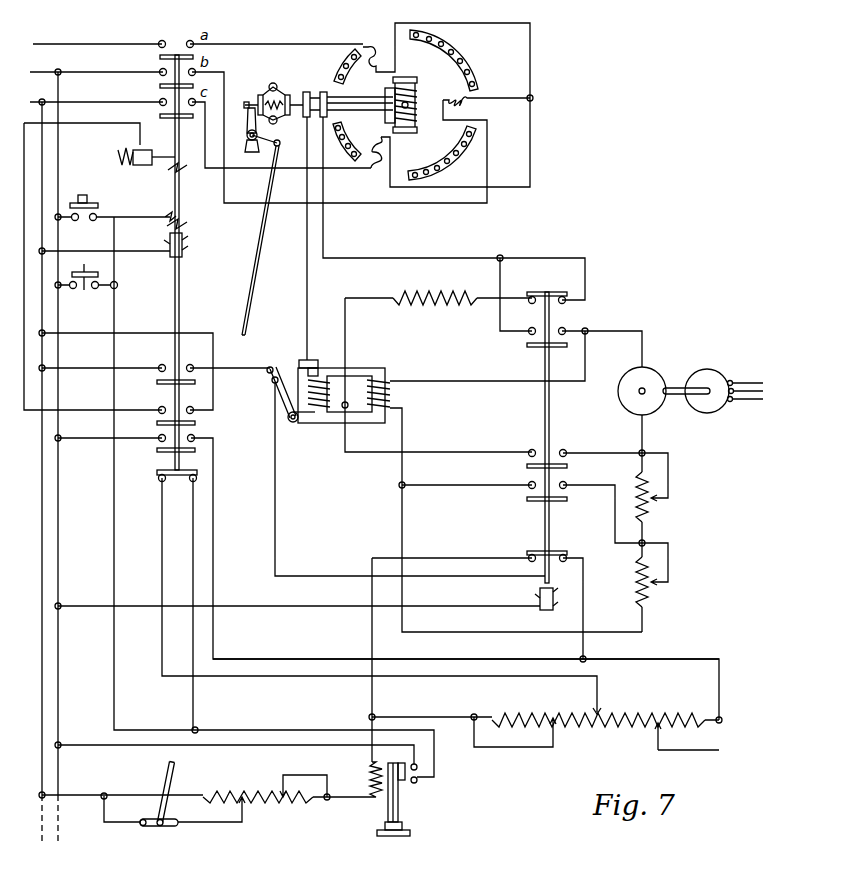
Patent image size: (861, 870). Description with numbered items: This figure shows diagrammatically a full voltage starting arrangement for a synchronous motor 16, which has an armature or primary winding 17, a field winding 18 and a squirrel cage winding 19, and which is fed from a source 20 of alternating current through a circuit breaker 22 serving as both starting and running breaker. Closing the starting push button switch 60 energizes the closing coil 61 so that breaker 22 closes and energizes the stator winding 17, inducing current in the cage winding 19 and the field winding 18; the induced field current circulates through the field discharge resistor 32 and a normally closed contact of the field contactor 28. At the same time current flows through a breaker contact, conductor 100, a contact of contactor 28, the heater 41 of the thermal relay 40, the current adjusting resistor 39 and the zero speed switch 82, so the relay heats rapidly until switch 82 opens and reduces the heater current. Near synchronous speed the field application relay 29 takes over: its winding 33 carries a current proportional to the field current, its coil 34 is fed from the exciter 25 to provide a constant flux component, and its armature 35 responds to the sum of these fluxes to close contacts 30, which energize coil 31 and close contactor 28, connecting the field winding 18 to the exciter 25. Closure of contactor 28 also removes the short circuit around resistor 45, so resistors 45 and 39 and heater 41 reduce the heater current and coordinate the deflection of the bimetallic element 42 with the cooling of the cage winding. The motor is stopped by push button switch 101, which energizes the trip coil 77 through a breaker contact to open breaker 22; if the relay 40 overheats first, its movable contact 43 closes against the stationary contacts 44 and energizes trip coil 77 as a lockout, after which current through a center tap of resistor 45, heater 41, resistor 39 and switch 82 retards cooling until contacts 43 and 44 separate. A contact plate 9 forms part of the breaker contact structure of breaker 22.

The source of current 20 is at (108, 36).
The zero speed switch 82 is at (272, 81).
The armature or primary winding 17 is at (376, 46).
The synchronous motor 16 is at (335, 73).
The squirrel cage winding 19 is at (466, 62).
The field winding 18 is at (417, 100).
The trip coil 77 is at (136, 163).
The circuit breaker 22 is at (207, 200).
The starting push button switch 60 is at (80, 200).
The closing coil 61 is at (183, 241).
The push button switch 101 is at (88, 290).
The field discharge resistor 32 is at (441, 293).
The armature 35 is at (280, 365).
The winding 33 is at (322, 378).
The contacts 30 is at (267, 377).
The coil 34 is at (392, 392).
The field application relay 29 is at (332, 392).
The field contactor 28 is at (540, 415).
The exciter 25 is at (663, 372).
The contact plate 9 is at (177, 486).
The coil 31 is at (540, 594).
The conductor 100 is at (313, 659).
The resistor 45 is at (625, 728).
The heater 41 is at (372, 781).
The stationary contacts 44 is at (420, 769).
The movable contact 43 is at (401, 785).
The bimetallic element 42 is at (389, 810).
The thermal relay 40 is at (403, 795).
The current adjusting resistor 39 is at (258, 810).